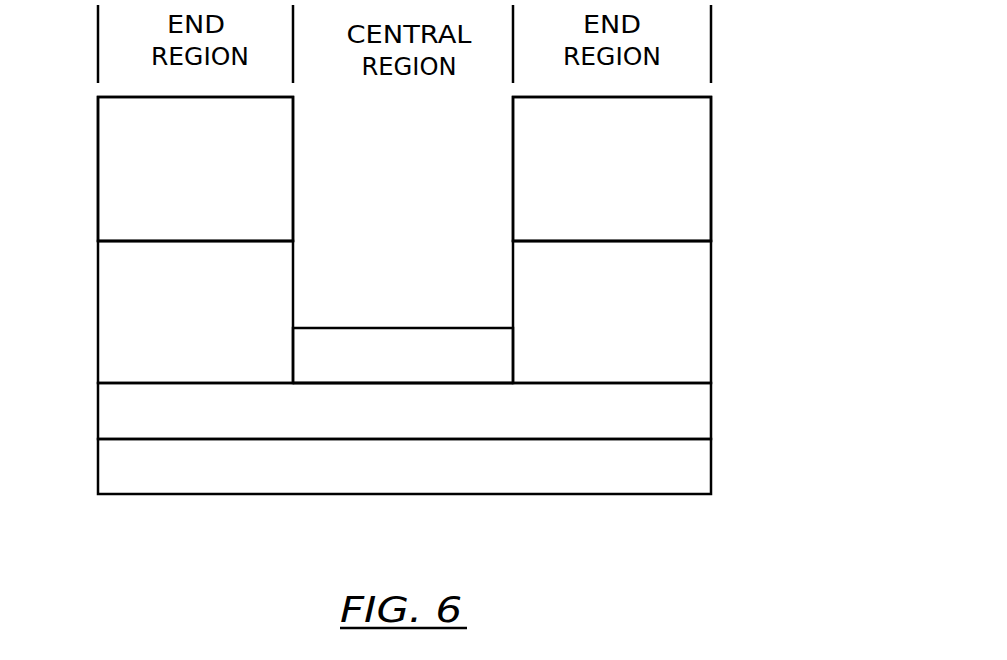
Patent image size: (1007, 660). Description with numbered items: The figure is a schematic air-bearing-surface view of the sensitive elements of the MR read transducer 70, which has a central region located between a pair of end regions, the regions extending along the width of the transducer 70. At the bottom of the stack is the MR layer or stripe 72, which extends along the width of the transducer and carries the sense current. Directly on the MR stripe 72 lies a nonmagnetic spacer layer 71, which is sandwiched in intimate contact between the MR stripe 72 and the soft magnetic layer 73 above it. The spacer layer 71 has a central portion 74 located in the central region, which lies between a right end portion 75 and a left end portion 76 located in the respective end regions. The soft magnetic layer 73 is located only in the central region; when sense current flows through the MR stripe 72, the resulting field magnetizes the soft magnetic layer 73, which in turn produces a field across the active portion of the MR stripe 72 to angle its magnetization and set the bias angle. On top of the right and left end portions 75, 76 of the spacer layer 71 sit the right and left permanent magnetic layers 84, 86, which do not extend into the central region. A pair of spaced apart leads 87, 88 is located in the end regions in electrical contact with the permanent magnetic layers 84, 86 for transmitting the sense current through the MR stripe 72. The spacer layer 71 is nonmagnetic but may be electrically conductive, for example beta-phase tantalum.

The MR read transducer 70 is at (752, 124).
The nonmagnetic spacer layer 71 is at (467, 368).
The MR layer 72 is at (330, 512).
The soft magnetic layer 73 is at (319, 343).
The central portion of the spacer layer 74 is at (455, 427).
The right end portion of the spacer layer 75 is at (597, 422).
The left end portion of the spacer layer 76 is at (232, 418).
The right permanent magnetic layer 84 is at (696, 330).
The left permanent magnetic layer 86 is at (121, 310).
The lead 87 is at (694, 190).
The lead 88 is at (121, 172).